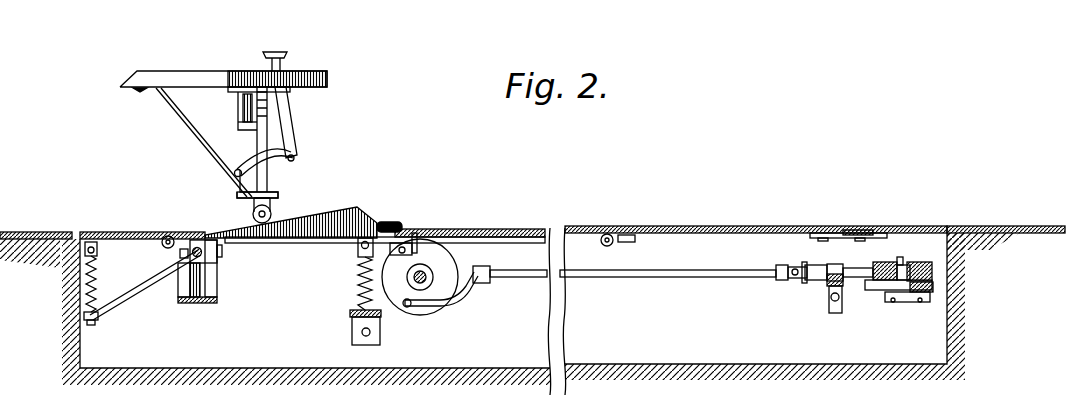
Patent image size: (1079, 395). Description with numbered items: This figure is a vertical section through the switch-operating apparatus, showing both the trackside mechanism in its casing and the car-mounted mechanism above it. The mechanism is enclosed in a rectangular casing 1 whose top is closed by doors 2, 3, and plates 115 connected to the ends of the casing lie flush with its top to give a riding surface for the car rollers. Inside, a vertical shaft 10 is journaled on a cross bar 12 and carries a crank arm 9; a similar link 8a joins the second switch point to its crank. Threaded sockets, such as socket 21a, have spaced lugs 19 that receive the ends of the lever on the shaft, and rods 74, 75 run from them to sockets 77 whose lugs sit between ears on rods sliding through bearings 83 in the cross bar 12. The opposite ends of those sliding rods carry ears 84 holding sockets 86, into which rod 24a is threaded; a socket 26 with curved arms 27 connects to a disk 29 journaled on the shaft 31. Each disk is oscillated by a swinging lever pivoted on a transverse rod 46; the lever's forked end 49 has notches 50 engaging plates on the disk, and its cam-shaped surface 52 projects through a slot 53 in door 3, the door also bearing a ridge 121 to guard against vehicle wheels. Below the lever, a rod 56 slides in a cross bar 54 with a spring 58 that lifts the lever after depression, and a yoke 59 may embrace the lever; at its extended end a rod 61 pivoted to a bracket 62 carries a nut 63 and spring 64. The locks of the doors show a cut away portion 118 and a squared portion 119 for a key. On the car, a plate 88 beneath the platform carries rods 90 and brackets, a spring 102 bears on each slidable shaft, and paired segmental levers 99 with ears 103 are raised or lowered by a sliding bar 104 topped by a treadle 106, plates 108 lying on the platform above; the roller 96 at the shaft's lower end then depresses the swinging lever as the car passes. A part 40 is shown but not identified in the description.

The casing 1 is at (556, 288).
The door 2 is at (728, 226).
The door 3 is at (133, 232).
The plate 115 is at (50, 222).
The plate 108 is at (226, 71).
The treadle 106 is at (284, 52).
The rod 90 is at (268, 178).
The plate 88 is at (238, 94).
The ear 84 is at (243, 123).
The spring 102 is at (292, 103).
The vertically sliding bar 104 is at (292, 134).
The ear 103 is at (297, 161).
The segmental lever 99 is at (236, 172).
The slot 53 is at (196, 228).
The roller 96 is at (249, 212).
The cam-shaped surface 52 is at (362, 197).
The ridge 121 is at (393, 222).
The squared portion 119 is at (413, 235).
The cut away portion 118 is at (886, 232).
The notch 50 is at (416, 238).
The fork 49 is at (445, 231).
The yoke 59 is at (358, 247).
The rod 56 is at (358, 283).
The spring 58 is at (350, 312).
The cross bar 54 is at (352, 340).
The disk 29 is at (450, 262).
The shaft 31 is at (420, 283).
The curved arm 27 is at (455, 298).
The socket 26 is at (481, 267).
The rod 24a is at (660, 278).
The bracket 62 is at (98, 251).
The rod 61 is at (97, 290).
The nut 63 is at (96, 323).
The spring 64 is at (145, 287).
The rod 46 is at (183, 233).
The socket 86 is at (780, 281).
The bearing 83 is at (835, 265).
The rod 74 is at (850, 281).
The socket 77 is at (862, 267).
The pin 40 is at (899, 262).
The lug 19 is at (932, 268).
The rod 75 is at (890, 272).
The cross bar 12 is at (935, 288).
The crank arm 9 is at (896, 302).
The link 8a is at (900, 302).
The vertical shaft 10 is at (915, 293).
The threaded socket 21a is at (905, 262).